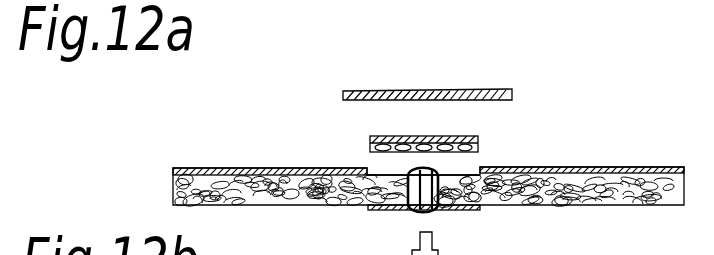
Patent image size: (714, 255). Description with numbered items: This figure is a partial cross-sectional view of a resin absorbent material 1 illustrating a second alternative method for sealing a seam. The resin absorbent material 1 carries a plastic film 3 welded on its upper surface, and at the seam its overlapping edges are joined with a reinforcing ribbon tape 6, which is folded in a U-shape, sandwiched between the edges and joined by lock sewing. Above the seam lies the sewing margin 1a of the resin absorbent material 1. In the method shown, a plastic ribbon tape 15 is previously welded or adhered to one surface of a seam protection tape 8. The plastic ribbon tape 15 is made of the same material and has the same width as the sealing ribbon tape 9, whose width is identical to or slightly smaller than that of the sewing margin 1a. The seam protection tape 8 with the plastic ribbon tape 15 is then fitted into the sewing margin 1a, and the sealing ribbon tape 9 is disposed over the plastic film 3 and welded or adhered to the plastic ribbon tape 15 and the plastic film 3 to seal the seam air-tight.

The resin absorbent material 1 is at (275, 205).
The sewing margin 1a is at (468, 168).
The plastic film 3 is at (592, 172).
The reinforcing ribbon tape 6 is at (468, 208).
The seam protection tape 8 is at (370, 150).
The sealing ribbon tape 9 is at (447, 90).
The plastic ribbon tape 15 is at (368, 138).